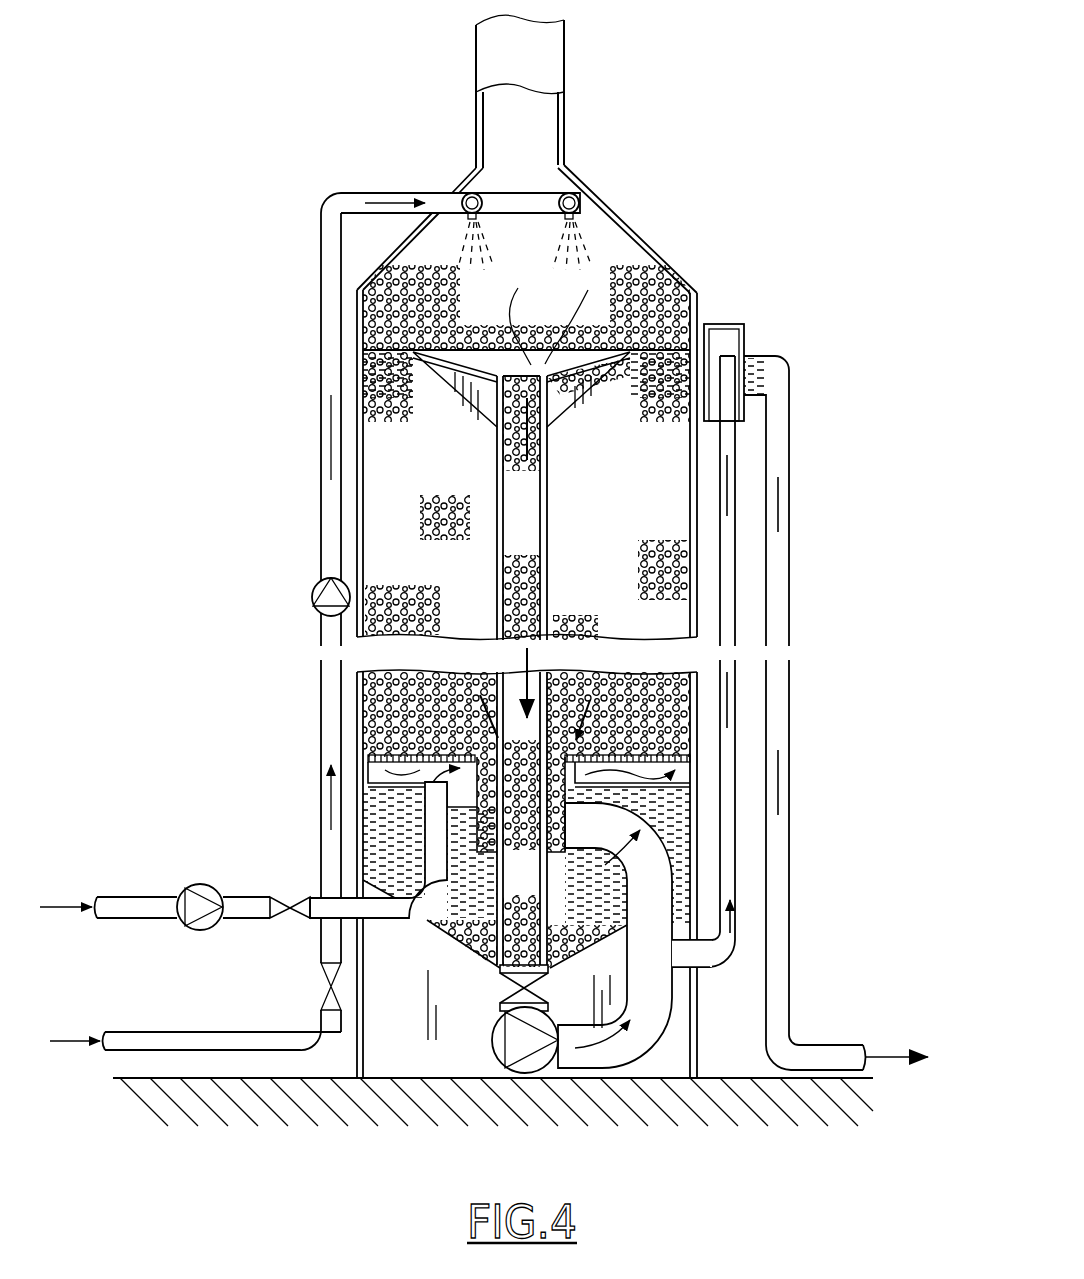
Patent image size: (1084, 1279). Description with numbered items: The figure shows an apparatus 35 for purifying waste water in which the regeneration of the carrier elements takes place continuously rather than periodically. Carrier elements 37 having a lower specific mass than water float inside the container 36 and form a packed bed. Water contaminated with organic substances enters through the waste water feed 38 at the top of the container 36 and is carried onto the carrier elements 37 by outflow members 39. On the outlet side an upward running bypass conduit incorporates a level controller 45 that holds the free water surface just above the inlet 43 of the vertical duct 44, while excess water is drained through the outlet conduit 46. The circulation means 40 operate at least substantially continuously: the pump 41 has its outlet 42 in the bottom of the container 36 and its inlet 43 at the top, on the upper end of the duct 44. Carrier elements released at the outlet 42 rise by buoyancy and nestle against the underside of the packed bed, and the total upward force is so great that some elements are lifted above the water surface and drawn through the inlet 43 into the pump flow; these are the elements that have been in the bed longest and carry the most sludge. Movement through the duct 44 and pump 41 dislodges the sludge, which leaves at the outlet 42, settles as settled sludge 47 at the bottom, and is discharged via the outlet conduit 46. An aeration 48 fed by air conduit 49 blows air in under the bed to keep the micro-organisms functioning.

The apparatus 35 is at (640, 156).
The container 36 is at (643, 243).
The carrier elements 37 is at (677, 285).
The waste water feed 38 is at (165, 1034).
The outflow members 39 is at (482, 216).
The circulation means 40 is at (490, 1058).
The pump 41 is at (526, 1046).
The outlet 42 is at (683, 810).
The inlet 43 is at (521, 351).
The vertical duct 44 is at (549, 505).
The level controller 45 is at (747, 341).
The outlet conduit 46 is at (838, 1050).
The settled sludge 47 is at (484, 986).
The aeration 48 is at (393, 762).
The conduit 49 is at (162, 903).